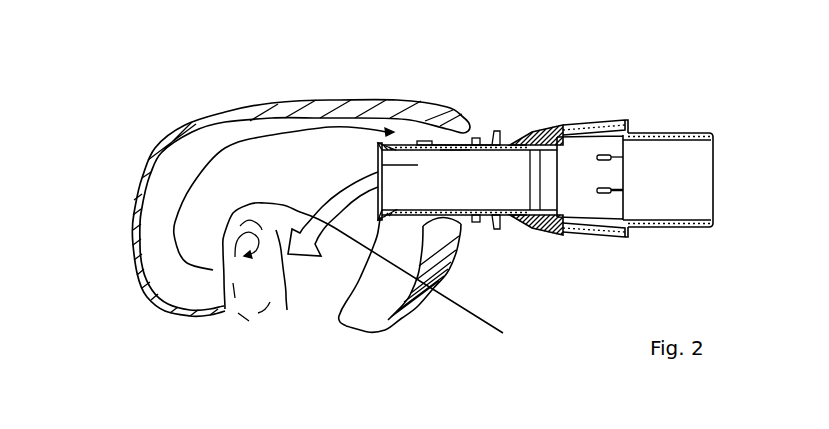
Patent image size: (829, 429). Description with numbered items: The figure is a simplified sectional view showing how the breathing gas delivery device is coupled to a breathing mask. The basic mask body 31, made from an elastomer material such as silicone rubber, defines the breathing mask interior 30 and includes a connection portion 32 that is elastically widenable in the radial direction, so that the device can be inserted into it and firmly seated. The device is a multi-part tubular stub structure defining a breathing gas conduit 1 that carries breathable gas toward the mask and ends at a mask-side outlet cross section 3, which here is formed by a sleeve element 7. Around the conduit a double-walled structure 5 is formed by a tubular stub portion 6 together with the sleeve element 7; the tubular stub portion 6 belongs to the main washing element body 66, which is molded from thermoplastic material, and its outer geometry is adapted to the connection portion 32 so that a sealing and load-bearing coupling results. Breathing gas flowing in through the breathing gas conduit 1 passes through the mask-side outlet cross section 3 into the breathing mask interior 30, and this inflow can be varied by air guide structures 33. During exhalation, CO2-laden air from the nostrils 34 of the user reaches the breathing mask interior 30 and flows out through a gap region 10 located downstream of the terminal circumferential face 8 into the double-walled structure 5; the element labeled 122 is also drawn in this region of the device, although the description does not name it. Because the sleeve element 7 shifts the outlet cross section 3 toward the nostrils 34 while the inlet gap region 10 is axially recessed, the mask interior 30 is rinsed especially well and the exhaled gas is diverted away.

The breathing gas conduit 1 is at (504, 193).
The mask-side outlet cross section 3 is at (391, 197).
The double-walled structure 5 is at (442, 134).
The tubular stub portion 6 is at (477, 224).
The sleeve element 7 is at (455, 167).
The terminal circumferential face 8 is at (378, 218).
The gap region 10 is at (398, 231).
The breathing mask interior 30 is at (228, 188).
The basic mask body 31 is at (332, 107).
The connection portion 32 is at (476, 127).
The air guide structures 33 is at (378, 152).
The nostrils 34 is at (249, 295).
The main washing element body 66 is at (535, 233).
The outlet opening 122 is at (452, 165).